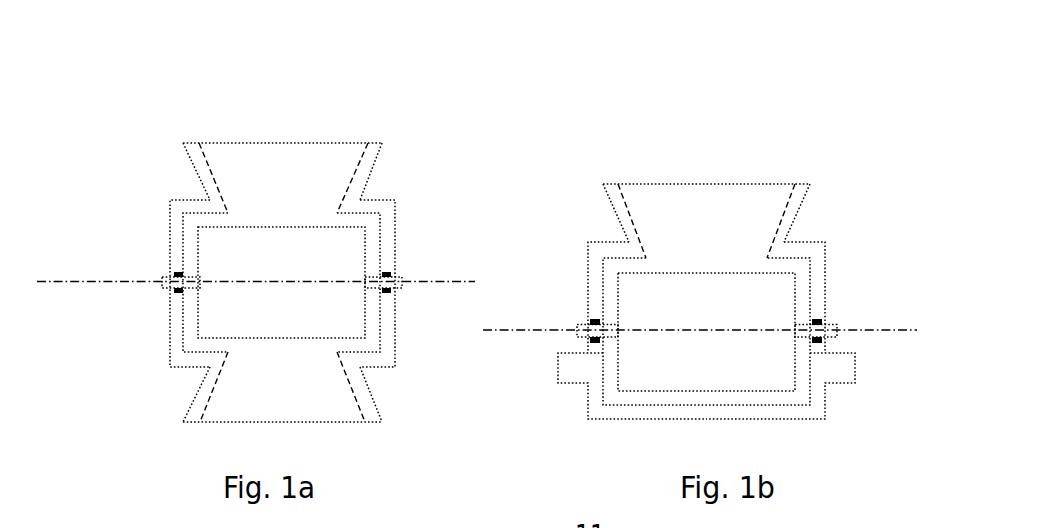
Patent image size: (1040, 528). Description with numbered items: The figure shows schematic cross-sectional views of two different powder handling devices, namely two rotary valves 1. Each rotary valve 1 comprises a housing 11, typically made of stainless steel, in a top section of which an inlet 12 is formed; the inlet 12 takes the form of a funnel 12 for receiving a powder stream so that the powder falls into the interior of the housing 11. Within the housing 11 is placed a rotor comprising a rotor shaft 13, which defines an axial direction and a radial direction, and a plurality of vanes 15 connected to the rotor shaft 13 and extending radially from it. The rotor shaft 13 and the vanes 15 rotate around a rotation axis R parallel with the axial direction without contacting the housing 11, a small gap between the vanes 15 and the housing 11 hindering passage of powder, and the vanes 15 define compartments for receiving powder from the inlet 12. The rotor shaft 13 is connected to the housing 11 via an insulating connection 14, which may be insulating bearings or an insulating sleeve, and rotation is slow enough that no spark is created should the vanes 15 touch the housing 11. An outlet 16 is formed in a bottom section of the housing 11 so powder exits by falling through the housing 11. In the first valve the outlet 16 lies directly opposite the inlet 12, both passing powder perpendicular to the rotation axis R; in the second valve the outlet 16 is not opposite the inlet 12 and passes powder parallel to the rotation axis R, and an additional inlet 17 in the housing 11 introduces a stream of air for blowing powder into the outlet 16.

In FIG. 1A, the rotary valve 1 is at (175, 98).
In FIG. 1B, the rotary valve 1 is at (595, 143).
In FIG. 1A, the housing 11 is at (375, 197).
In FIG. 1B, the housing 11 is at (818, 243).
In FIG. 1A, the inlet 12 is at (284, 142).
In FIG. 1B, the inlet 12 is at (710, 184).
In FIG. 1A, the rotor shaft 13 is at (403, 281).
In FIG. 1B, the rotor shaft 13 is at (836, 330).
In FIG. 1A, the insulating connection 14 is at (175, 292).
In FIG. 1B, the insulating connection 14 is at (593, 323).
In FIG. 1A, the vanes 15 is at (198, 258).
In FIG. 1B, the vanes 15 is at (617, 273).
In FIG. 1A, the outlet 16 is at (282, 418).
In FIG. 1B, the outlet 16 is at (558, 365).
In FIG. 1B, the additional inlet 17 is at (853, 368).
In FIG. 1A, the rotation axis R is at (110, 280).
In FIG. 1B, the rotation axis R is at (886, 330).